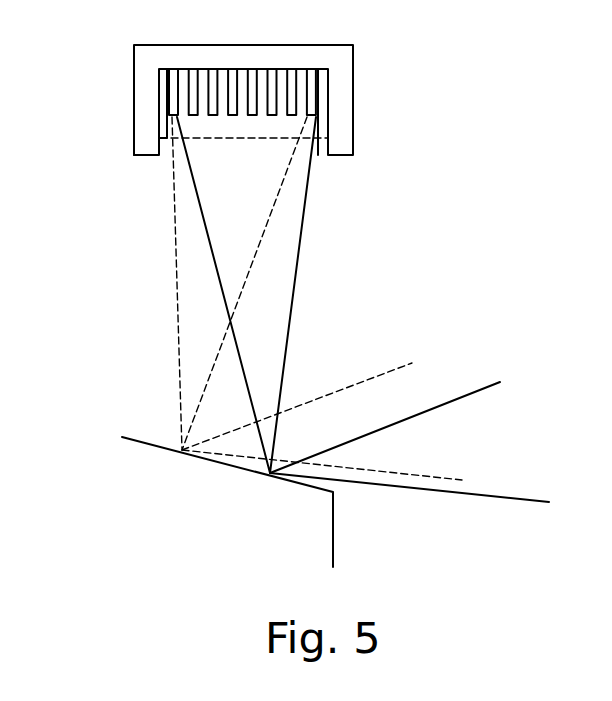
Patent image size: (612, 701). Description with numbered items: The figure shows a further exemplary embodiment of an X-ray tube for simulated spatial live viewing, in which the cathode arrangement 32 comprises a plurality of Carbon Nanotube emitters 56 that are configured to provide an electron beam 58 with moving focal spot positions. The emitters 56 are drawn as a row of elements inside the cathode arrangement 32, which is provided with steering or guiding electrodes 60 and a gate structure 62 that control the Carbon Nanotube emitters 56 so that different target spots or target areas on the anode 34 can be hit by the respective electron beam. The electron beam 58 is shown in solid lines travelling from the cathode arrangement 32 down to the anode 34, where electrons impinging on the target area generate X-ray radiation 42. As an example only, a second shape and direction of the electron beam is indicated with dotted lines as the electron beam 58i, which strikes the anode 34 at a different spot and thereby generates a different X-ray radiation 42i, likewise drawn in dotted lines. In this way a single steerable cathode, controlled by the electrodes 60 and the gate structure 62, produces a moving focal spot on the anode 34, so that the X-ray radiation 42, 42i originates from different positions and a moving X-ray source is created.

The cathode arrangement 32 is at (97, 66).
The Carbon Nanotube emitters 56 is at (328, 97).
The steering or guiding electrodes 60 is at (134, 123).
The gate structure 62 is at (162, 156).
The electron beam 58 is at (293, 272).
The second electron beam shape/direction 58i is at (177, 314).
The X-ray radiation 42 is at (481, 381).
The different X-ray radiation 42i is at (392, 370).
The anode 34 is at (335, 525).